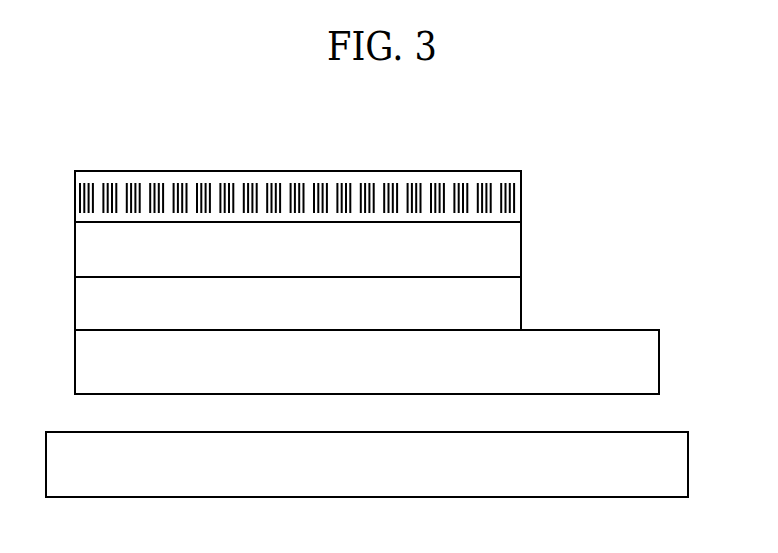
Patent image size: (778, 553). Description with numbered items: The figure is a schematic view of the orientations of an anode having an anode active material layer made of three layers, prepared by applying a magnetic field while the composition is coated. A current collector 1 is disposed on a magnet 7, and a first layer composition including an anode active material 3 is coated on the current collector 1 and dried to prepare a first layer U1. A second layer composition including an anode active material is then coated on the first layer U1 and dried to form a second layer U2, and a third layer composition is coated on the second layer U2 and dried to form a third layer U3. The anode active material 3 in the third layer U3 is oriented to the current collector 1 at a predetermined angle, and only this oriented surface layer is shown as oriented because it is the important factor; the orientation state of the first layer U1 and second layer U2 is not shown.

The anode active material 3 is at (78, 195).
The third layer U3 is at (521, 195).
The second layer U2 is at (521, 248).
The first layer U1 is at (521, 301).
The current collector 1 is at (650, 362).
The magnet 7 is at (678, 463).